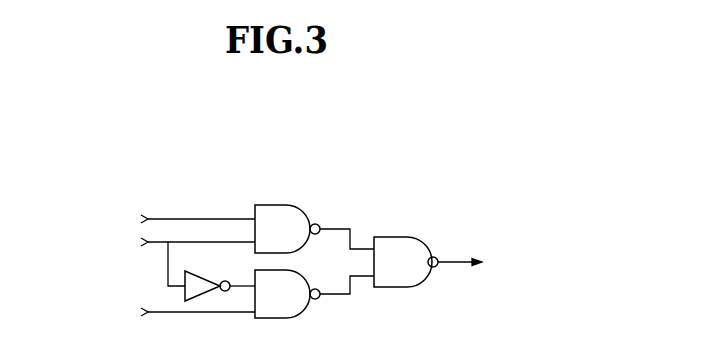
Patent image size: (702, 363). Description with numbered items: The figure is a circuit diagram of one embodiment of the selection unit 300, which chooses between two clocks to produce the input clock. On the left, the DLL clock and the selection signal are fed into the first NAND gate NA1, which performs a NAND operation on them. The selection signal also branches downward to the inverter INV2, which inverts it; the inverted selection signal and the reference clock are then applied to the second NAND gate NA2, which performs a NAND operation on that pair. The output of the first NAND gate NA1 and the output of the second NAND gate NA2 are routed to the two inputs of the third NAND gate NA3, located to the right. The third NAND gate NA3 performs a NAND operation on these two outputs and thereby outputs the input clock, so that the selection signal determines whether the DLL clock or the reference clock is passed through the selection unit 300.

The selection unit 300 is at (459, 172).
The first NAND gate NA1 is at (287, 235).
The second NAND gate NA2 is at (287, 302).
The third NAND gate NA3 is at (406, 268).
The inverter INV2 is at (207, 291).